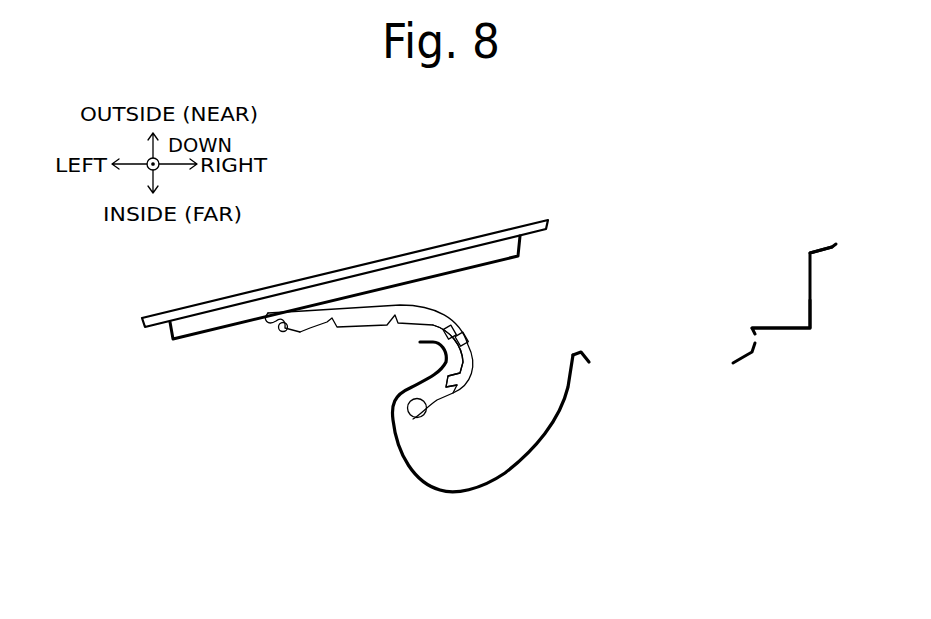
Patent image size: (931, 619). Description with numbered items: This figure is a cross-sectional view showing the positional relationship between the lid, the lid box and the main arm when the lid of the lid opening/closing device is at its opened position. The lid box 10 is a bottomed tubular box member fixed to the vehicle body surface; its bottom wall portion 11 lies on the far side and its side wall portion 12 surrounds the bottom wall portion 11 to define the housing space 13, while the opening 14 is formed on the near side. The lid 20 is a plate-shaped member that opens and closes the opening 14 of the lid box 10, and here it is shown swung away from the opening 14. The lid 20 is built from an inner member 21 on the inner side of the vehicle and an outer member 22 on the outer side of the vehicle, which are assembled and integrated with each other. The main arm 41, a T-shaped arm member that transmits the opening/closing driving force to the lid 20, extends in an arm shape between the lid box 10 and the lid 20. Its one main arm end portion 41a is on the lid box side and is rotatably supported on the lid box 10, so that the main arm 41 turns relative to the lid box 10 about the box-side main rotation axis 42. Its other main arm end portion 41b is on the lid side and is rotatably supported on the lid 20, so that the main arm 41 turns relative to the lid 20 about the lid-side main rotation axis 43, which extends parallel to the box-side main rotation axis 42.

The lid box 10 is at (570, 388).
The bottom wall portion 11 is at (781, 329).
The side wall portion 12 is at (808, 283).
The housing space 13 is at (638, 278).
The opening 14 is at (807, 253).
The lid 20 is at (345, 287).
The inner member 21 is at (183, 339).
The outer member 22 is at (425, 252).
The main arm 41 is at (387, 381).
The one main arm end portion 41a is at (445, 396).
The other main arm end portion 41b is at (298, 318).
The box-side main rotation axis 42 is at (423, 403).
The lid-side main rotation axis 43 is at (286, 332).